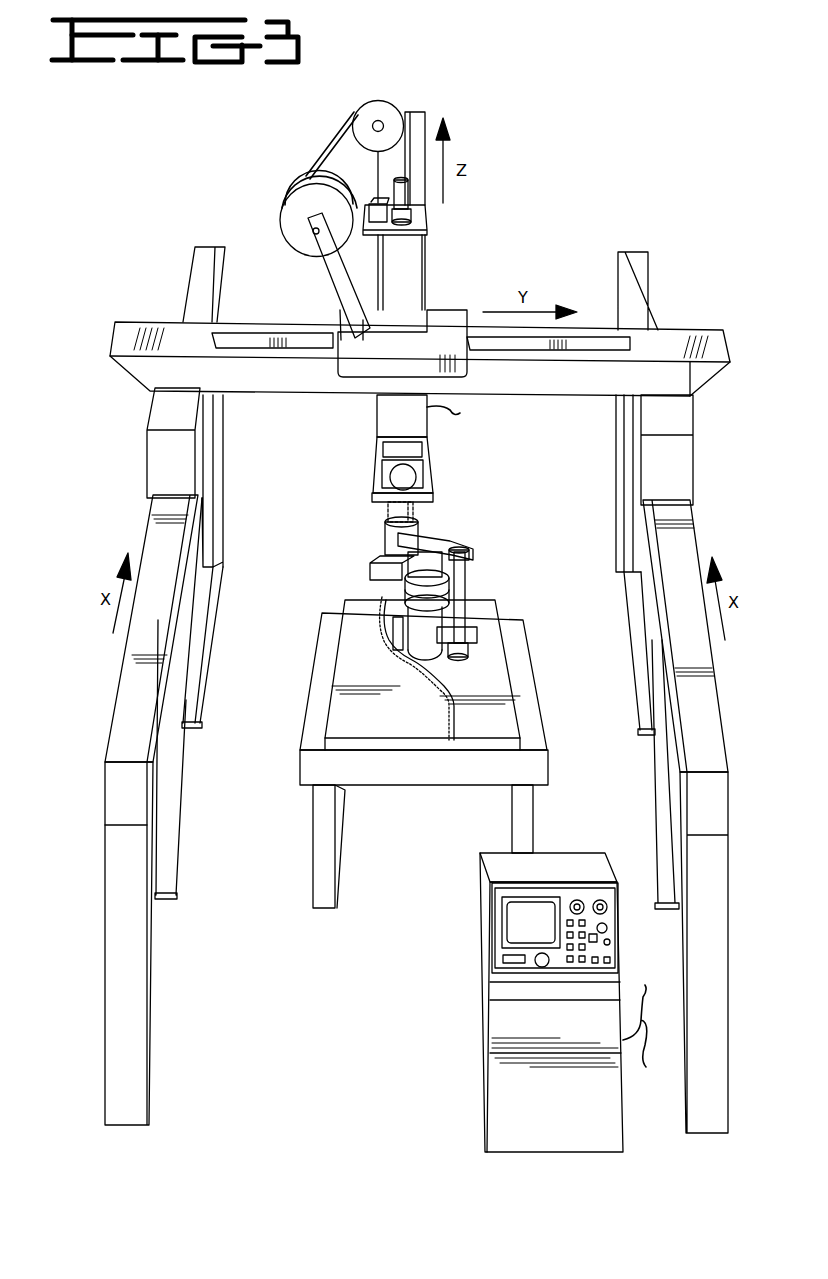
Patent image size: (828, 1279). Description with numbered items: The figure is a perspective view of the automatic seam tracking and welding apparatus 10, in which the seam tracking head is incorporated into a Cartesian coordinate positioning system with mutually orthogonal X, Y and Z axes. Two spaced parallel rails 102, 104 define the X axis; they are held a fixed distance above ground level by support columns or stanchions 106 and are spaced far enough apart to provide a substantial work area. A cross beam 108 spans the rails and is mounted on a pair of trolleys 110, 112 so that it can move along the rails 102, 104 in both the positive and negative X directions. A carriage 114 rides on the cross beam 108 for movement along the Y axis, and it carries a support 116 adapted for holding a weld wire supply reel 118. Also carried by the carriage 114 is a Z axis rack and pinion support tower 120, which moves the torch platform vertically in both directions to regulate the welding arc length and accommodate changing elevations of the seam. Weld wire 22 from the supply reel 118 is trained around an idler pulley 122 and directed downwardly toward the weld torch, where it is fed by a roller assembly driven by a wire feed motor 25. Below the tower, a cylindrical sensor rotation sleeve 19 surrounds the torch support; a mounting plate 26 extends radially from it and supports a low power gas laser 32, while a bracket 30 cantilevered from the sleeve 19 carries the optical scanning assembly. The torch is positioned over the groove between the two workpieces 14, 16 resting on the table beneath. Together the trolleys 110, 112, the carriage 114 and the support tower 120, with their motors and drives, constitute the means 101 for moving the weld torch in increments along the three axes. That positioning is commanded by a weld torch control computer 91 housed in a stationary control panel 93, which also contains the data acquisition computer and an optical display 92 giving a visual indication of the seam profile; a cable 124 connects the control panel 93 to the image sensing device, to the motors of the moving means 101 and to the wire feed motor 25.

The automatic seam tracking and welding apparatus 10 is at (627, 149).
The workpiece 14 is at (352, 729).
The workpiece 16 is at (468, 680).
The sensor rotation sleeve 19 is at (390, 516).
The weld wire 22 is at (340, 135).
The wire feed motor 25 is at (412, 476).
The mounting plate 26 is at (440, 538).
The bracket 30 is at (372, 575).
The low power gas laser 32 is at (470, 587).
The weld torch control computer 91 is at (490, 1021).
The optical display 92 is at (522, 915).
The control panel 93 is at (540, 1117).
The means for moving the weld torch 101 is at (168, 306).
The rail 102 is at (712, 740).
The rail 104 is at (118, 722).
The support column or stanchion 106 is at (140, 1060).
The cross beam 108 is at (572, 387).
The trolley 110 is at (683, 474).
The trolley 112 is at (154, 472).
The carriage 114 is at (445, 312).
The support 116 is at (336, 286).
The weld wire supply reel 118 is at (290, 222).
The Z axis rack and pinion support tower 120 is at (384, 413).
The idler pulley 122 is at (384, 104).
The cable 124 is at (453, 420).